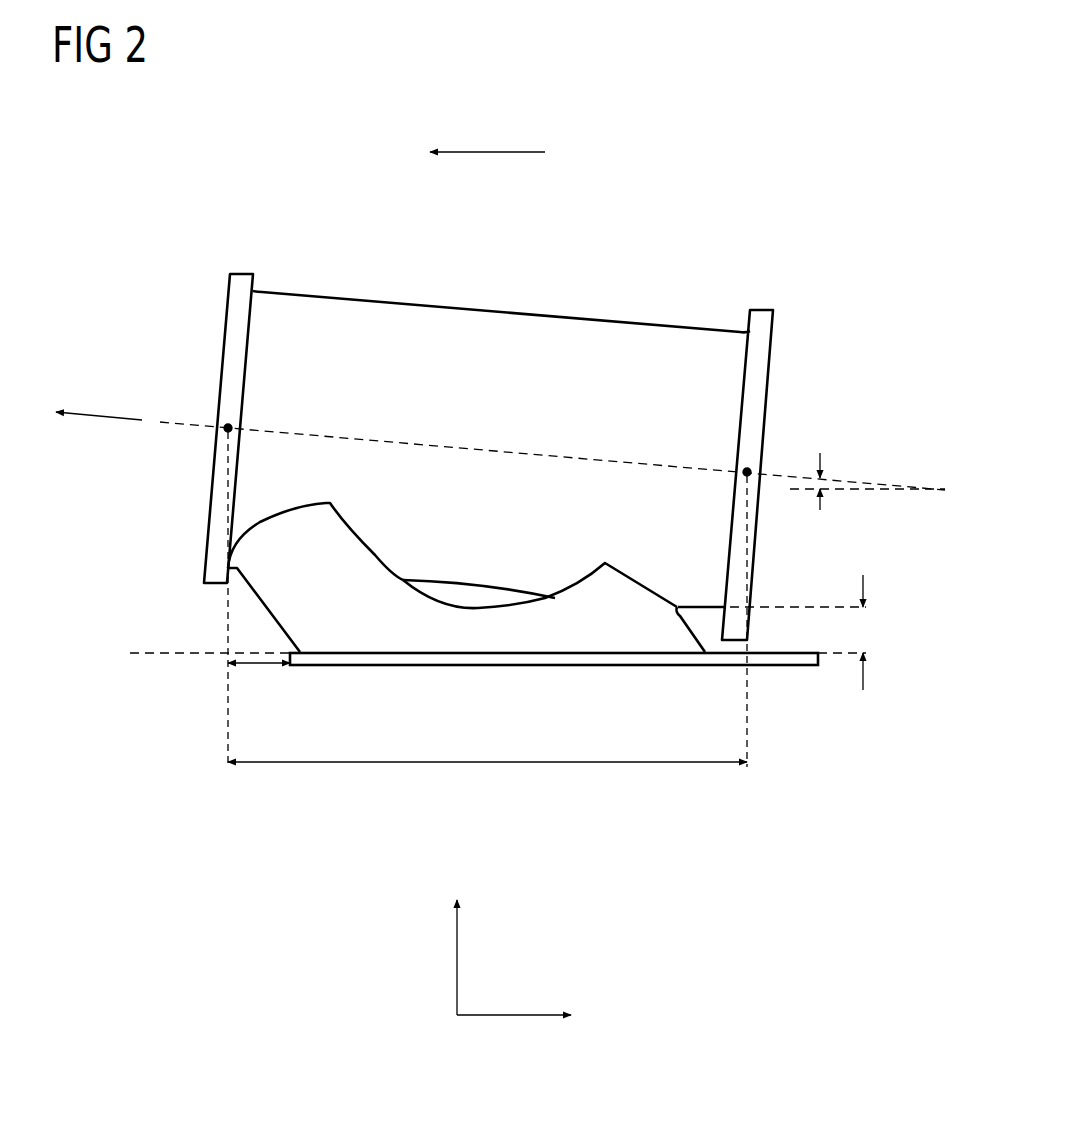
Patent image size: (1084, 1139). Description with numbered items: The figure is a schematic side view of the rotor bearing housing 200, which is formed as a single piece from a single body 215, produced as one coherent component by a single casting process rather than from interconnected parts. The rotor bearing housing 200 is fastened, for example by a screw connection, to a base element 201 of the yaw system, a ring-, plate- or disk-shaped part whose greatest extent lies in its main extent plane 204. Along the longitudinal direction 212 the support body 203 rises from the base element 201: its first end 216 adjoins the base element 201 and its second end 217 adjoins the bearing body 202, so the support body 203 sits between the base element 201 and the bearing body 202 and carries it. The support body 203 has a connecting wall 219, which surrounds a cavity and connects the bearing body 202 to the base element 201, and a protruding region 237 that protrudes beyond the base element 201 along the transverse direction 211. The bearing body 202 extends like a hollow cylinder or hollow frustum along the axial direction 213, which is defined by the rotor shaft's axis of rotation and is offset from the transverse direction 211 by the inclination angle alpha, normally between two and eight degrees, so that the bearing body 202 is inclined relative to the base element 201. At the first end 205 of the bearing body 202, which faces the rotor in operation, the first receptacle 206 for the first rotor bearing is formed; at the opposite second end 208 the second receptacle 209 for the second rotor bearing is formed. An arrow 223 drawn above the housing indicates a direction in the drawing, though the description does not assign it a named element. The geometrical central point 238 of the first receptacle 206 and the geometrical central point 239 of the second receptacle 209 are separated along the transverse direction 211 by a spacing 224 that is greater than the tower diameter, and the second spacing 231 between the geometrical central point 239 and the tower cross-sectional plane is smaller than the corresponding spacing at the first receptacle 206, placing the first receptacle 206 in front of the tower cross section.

The rotor bearing housing 200 is at (643, 183).
The base element 201 is at (780, 660).
The bearing body 202 is at (606, 333).
The support body 203 is at (590, 645).
The main extent plane 204 is at (172, 655).
The first end of the bearing body 205 is at (247, 258).
The first receptacle 206 is at (232, 320).
The second end of the bearing body 208 is at (767, 290).
The second receptacle 209 is at (760, 380).
The transverse direction 211 is at (510, 1018).
The longitudinal direction 212 is at (457, 957).
The axial direction 213 is at (105, 418).
The single body 215 is at (438, 290).
The first end of the support body 216 is at (538, 660).
The second end of the support body 217 is at (280, 528).
The connecting wall 219 is at (678, 630).
The feed direction 223 is at (485, 152).
The spacing 224 is at (480, 765).
The second spacing 231 is at (868, 630).
The protruding region 237 is at (262, 668).
The geometrical central point of the first receptacle 238 is at (232, 432).
The geometrical central point of the second receptacle 239 is at (744, 476).
The inclination angle alpha is at (818, 485).